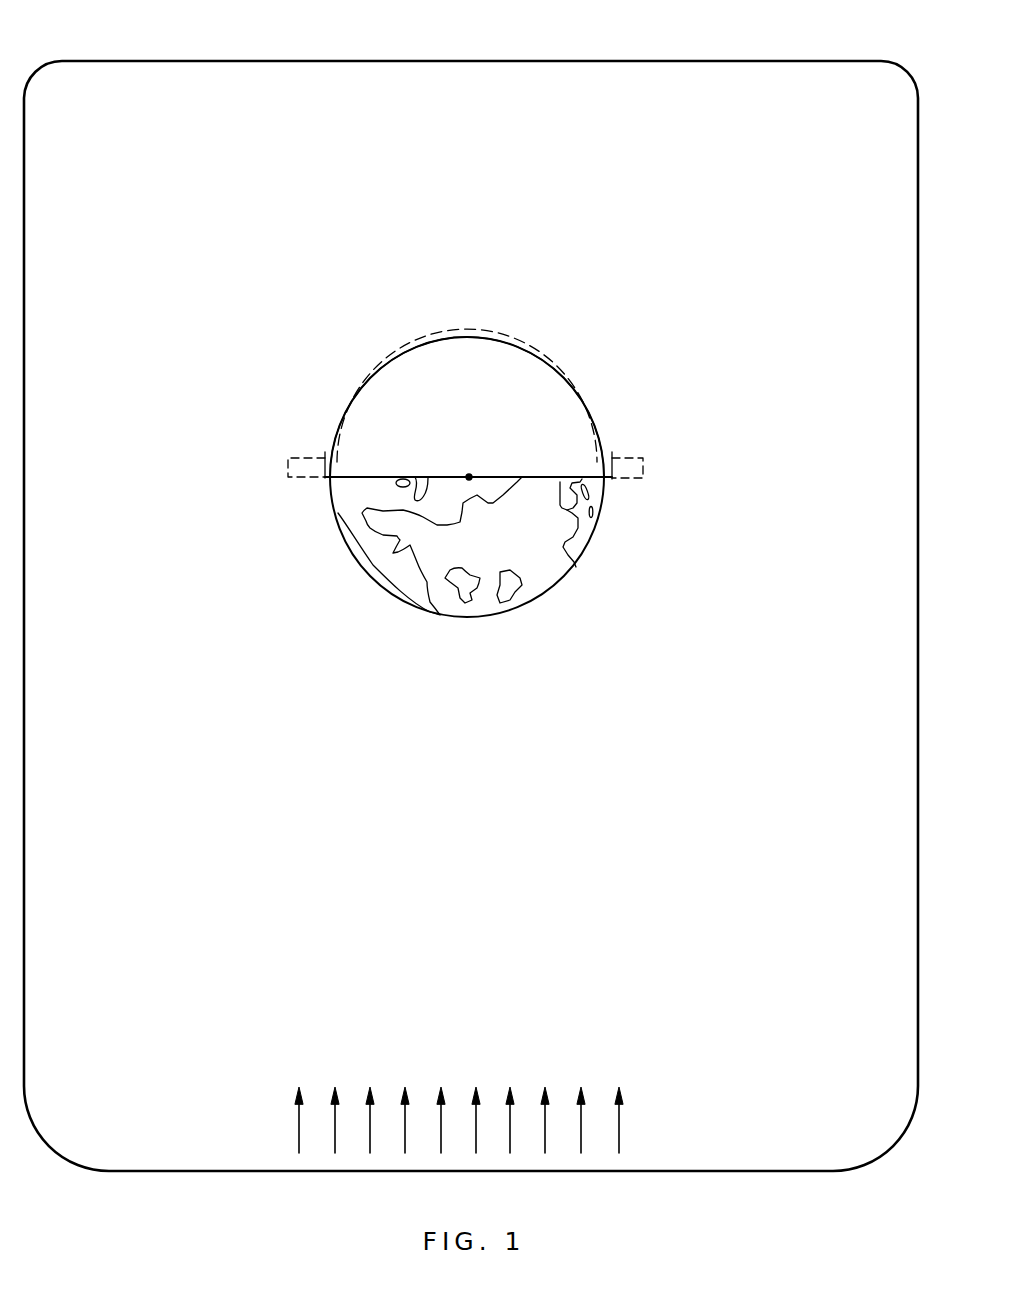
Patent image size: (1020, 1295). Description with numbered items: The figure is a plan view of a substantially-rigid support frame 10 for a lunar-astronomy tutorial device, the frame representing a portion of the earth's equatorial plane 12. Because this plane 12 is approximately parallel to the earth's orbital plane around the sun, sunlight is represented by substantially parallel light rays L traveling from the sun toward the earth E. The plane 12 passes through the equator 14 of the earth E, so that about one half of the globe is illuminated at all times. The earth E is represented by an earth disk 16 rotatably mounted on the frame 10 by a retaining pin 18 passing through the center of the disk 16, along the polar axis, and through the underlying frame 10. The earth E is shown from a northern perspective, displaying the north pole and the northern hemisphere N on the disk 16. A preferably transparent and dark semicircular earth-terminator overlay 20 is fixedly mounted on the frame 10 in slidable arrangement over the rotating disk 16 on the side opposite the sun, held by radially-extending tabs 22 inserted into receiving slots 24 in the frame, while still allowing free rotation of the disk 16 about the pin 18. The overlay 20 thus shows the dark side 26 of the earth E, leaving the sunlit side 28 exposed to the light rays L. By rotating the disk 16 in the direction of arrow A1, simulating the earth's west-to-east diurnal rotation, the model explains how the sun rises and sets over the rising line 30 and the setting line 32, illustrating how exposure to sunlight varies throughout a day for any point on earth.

The support frame 10 is at (853, 57).
The equatorial plane 12 is at (407, 865).
The equator 14 is at (547, 593).
The earth disk 16 is at (378, 384).
The retaining pin 18 is at (471, 474).
The earth-terminator overlay 20 is at (540, 349).
The radially-extending tabs 22 is at (290, 472).
The receiving slots 24 is at (326, 458).
The dark side 26 is at (480, 388).
The sunlit side 28 is at (487, 605).
The rising line 30 is at (327, 482).
The setting line 32 is at (613, 481).
The northern hemisphere N is at (415, 542).
The earth E is at (626, 574).
The arrow A1 is at (685, 768).
The light rays L is at (620, 1122).